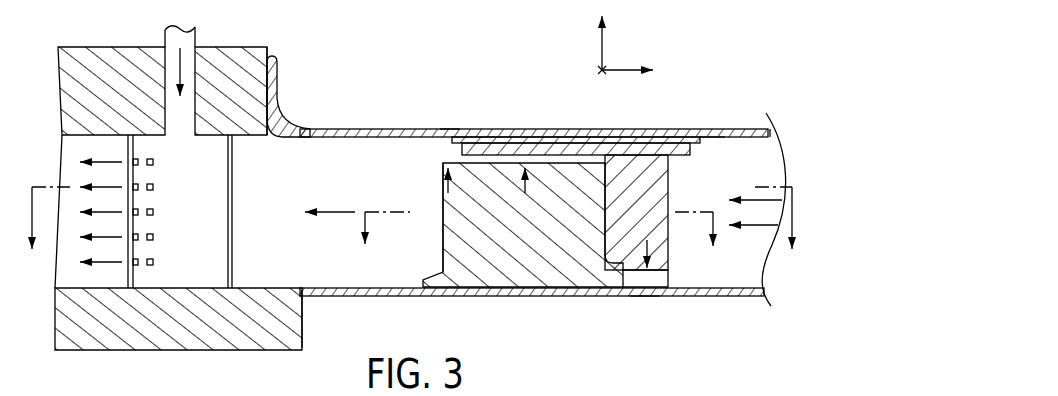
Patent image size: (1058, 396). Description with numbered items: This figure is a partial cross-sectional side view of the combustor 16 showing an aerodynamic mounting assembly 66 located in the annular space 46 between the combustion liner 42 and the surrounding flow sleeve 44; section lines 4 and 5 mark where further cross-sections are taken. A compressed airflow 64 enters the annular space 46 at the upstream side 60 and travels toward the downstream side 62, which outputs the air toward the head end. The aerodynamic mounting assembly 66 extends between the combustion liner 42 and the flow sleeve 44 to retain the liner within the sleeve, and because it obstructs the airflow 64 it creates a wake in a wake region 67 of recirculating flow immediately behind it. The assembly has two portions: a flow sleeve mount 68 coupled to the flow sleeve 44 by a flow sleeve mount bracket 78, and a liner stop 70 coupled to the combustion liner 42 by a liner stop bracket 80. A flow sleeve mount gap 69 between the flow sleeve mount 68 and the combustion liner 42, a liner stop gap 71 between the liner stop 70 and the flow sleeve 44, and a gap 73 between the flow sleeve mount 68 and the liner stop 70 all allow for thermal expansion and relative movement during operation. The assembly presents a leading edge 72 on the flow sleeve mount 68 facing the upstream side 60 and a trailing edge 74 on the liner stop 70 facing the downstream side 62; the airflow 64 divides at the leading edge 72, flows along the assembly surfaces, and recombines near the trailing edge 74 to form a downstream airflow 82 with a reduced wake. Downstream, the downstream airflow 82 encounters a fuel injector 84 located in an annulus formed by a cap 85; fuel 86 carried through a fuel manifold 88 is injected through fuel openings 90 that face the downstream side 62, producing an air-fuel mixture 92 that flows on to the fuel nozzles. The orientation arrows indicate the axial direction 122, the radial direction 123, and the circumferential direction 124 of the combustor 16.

The combustor 16 is at (728, 73).
The combustion liner 42 is at (311, 297).
The flow sleeve 44 is at (302, 128).
The annular space 46 is at (345, 143).
The upstream side 60 is at (768, 308).
The downstream side 62 is at (43, 291).
The airflow 64 is at (765, 228).
The aerodynamic mounting assembly 66 is at (674, 270).
The wake region 67 is at (440, 193).
The flow sleeve mount 68 is at (675, 190).
The flow sleeve mount gap 69 is at (647, 298).
The liner stop 70 is at (440, 250).
The liner stop gap 71 is at (446, 130).
The leading edge 72 is at (680, 228).
The gap 73 is at (523, 147).
The trailing edge 74 is at (436, 167).
The flow sleeve mount bracket 78 is at (713, 129).
The liner stop bracket 80 is at (418, 297).
The downstream airflow 82 is at (330, 189).
The fuel injector 84 is at (232, 210).
The cap 85 is at (90, 50).
The fuel 86 is at (165, 70).
The fuel manifold 88 is at (200, 118).
The fuel openings 90 is at (155, 212).
The air-fuel mixture 92 is at (108, 160).
The axial direction 122 is at (622, 73).
The radial direction 123 is at (604, 45).
The circumferential direction 124 is at (600, 68).
The section line 4 is at (413, 235).
The section line 5 is at (542, 244).